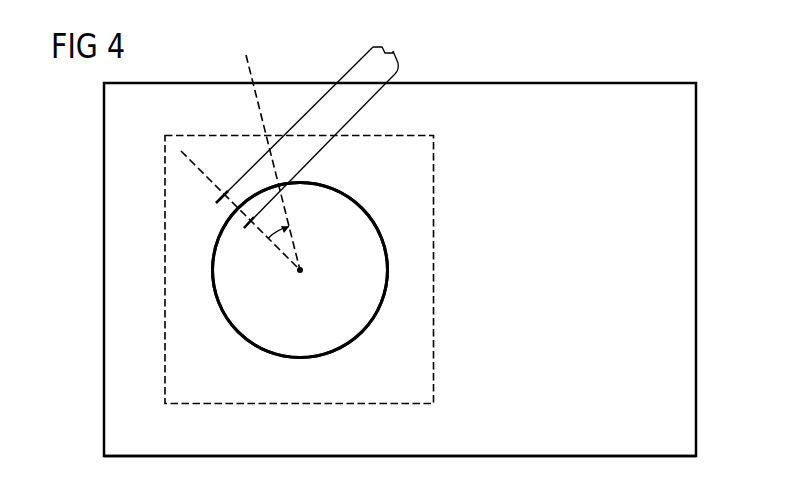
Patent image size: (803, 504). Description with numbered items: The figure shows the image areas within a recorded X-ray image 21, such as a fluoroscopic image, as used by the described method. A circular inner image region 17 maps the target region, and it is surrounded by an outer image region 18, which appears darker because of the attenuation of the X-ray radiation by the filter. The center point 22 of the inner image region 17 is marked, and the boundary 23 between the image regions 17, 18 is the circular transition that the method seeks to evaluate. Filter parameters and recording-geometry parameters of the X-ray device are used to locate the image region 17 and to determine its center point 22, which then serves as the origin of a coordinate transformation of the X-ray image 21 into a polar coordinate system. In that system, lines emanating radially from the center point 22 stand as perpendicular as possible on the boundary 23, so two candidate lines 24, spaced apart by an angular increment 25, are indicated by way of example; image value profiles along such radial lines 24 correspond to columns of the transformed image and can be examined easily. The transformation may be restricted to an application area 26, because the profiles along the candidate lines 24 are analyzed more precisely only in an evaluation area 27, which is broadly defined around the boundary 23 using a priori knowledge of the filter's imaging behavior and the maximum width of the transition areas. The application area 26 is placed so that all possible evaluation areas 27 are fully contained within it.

The image region 17 is at (225, 270).
The image region 18 is at (677, 253).
The X-ray image 21 is at (697, 400).
The center point 22 is at (303, 270).
The boundary 23 is at (225, 313).
The candidate lines 24 is at (245, 67).
The angular increment 25 is at (271, 243).
The application area 26 is at (165, 383).
The evaluation area 27 is at (319, 129).